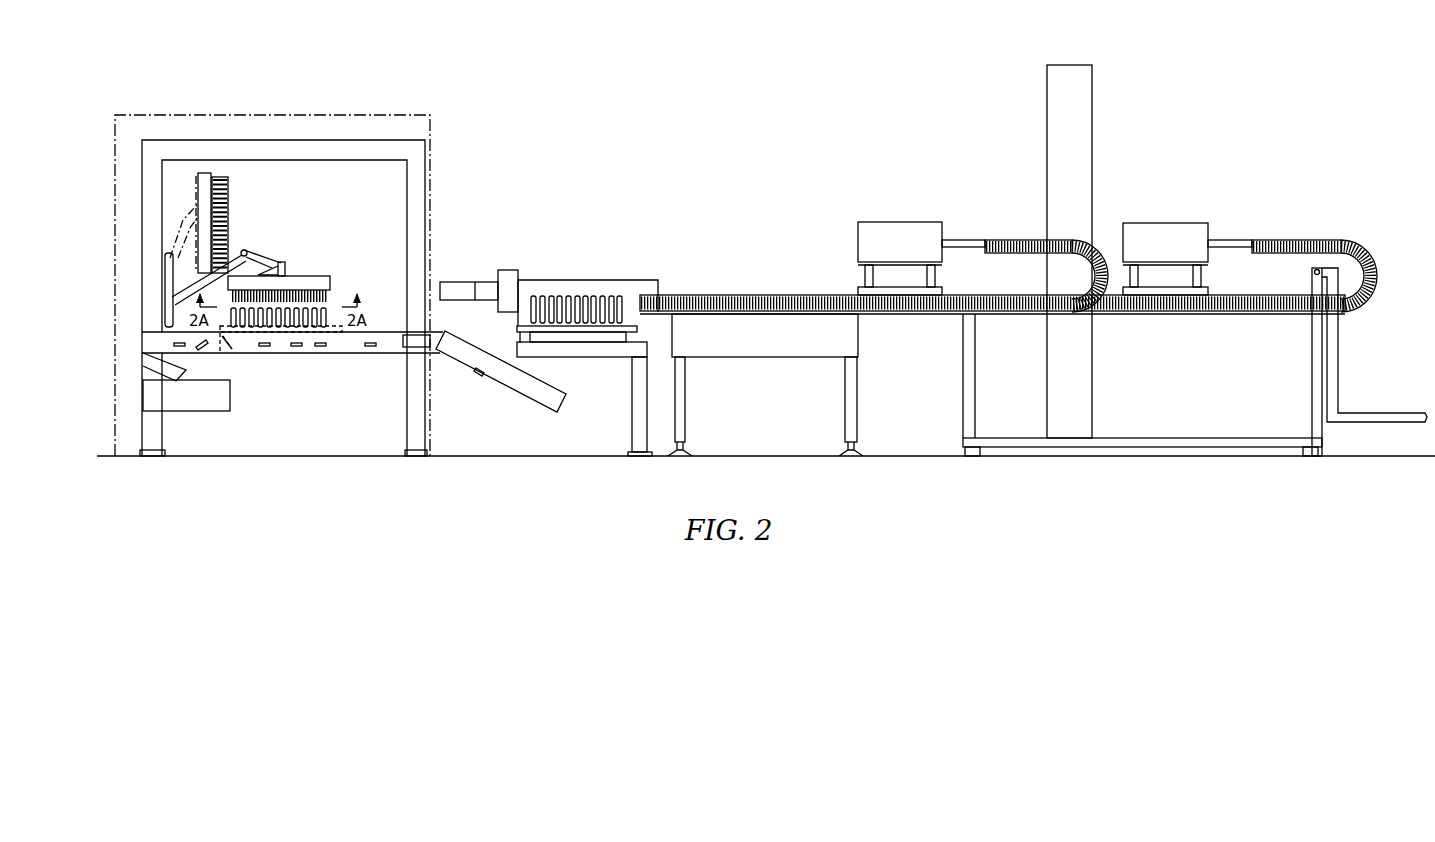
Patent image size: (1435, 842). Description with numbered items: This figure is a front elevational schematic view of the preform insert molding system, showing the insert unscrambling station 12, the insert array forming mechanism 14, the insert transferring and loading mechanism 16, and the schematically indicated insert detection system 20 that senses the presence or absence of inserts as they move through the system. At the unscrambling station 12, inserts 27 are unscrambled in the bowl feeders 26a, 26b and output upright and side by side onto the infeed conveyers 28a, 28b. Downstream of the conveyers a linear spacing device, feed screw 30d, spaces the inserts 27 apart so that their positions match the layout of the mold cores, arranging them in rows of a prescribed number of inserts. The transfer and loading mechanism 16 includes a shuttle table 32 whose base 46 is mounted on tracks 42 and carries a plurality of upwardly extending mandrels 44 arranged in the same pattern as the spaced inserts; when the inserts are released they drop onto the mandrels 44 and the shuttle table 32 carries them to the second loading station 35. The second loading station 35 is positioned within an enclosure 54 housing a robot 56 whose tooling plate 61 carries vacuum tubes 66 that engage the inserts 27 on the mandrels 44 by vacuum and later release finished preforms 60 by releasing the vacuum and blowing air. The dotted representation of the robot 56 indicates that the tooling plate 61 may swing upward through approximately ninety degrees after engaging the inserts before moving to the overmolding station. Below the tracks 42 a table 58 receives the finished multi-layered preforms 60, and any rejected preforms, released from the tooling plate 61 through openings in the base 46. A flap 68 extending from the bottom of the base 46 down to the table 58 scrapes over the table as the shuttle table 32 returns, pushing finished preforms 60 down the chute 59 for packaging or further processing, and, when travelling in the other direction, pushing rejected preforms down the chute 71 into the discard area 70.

The insert unscrambling station 12 is at (1110, 215).
The insert array forming mechanism 14 is at (690, 290).
The insert transferring and loading mechanism 16 is at (392, 180).
The insert detection system 20 is at (441, 354).
The bowl feeder 26a is at (893, 228).
The bowl feeder 26b is at (1163, 228).
The insert 27 is at (548, 296).
The infeed conveyer 28a is at (1364, 302).
The infeed conveyer 28b is at (812, 317).
The feed screw 30d is at (705, 316).
The shuttle table 32 is at (276, 332).
The second loading station 35 is at (263, 224).
The tracks 42 is at (621, 358).
The mandrels 44 is at (328, 318).
The base 46 is at (313, 334).
The enclosure 54 is at (300, 117).
The robot 56 is at (170, 293).
The table 58 is at (347, 354).
The chute 59 is at (523, 397).
The finished multi-layered preforms 60 is at (185, 345).
The tooling plate 61 is at (197, 180).
The vacuum tubes 66 is at (222, 177).
The flap 68 is at (228, 354).
The discard area 70 is at (197, 411).
The chute 71 is at (165, 362).